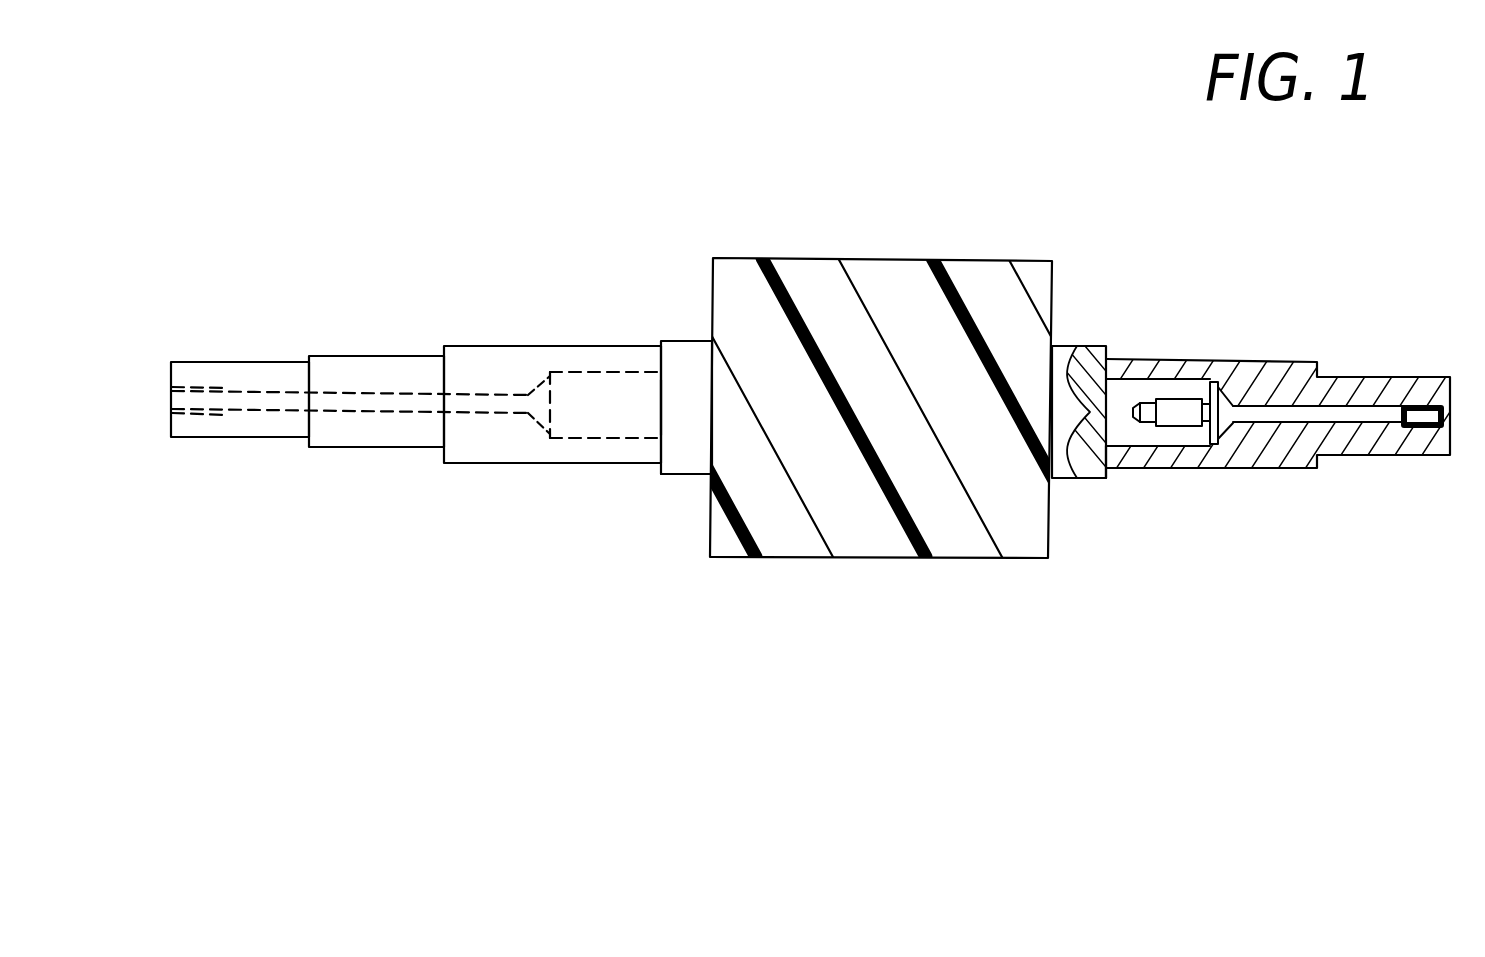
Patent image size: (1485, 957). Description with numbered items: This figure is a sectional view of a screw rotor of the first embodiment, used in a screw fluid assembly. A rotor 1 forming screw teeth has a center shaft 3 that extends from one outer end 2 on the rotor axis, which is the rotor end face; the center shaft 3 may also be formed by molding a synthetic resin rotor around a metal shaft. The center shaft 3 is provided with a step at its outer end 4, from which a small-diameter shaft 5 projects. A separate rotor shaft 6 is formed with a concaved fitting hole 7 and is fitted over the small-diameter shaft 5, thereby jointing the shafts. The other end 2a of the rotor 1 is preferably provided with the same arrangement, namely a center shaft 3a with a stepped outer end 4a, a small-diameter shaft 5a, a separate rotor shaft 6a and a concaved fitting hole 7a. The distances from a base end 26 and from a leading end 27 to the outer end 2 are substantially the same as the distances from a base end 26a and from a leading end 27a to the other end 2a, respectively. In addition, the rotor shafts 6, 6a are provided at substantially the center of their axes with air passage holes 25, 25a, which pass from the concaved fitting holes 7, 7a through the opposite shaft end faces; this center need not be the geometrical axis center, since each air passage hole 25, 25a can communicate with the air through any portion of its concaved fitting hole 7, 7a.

The rotor 1 is at (882, 378).
The outer end 2 is at (1050, 530).
The other end 2a is at (711, 527).
The center shaft 3 is at (1062, 346).
The center shaft 3a is at (686, 475).
The outer end 4 is at (1106, 478).
The outer end 4a is at (661, 343).
The small-diameter shaft 5 is at (1155, 378).
The small-diameter shaft 5a is at (588, 372).
The rotor shaft 6 is at (1272, 358).
The rotor shaft 6a is at (493, 346).
The concaved fitting hole 7 is at (1181, 446).
The concaved fitting hole 7a is at (597, 438).
The air passage hole 25 is at (1363, 404).
The air passage hole 25a is at (266, 391).
The base end 26 is at (1108, 362).
The base end 26a is at (657, 395).
The leading end 27 is at (1228, 378).
The leading end 27a is at (536, 392).